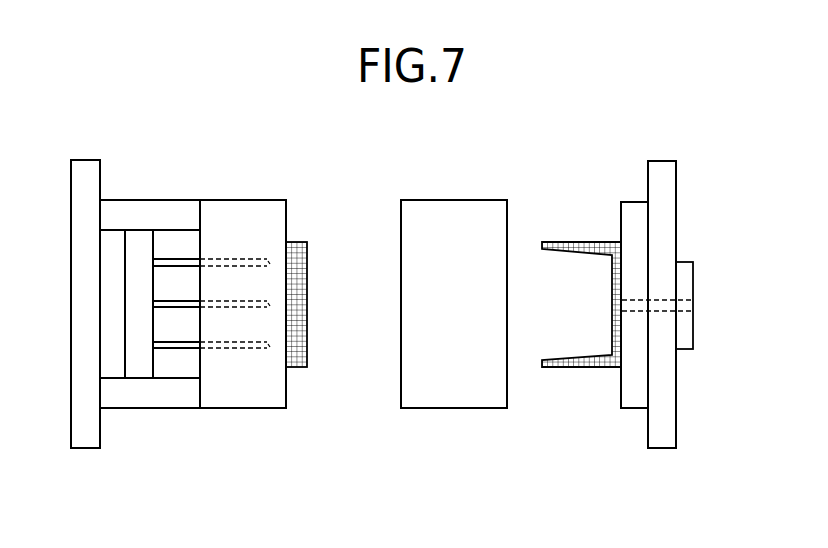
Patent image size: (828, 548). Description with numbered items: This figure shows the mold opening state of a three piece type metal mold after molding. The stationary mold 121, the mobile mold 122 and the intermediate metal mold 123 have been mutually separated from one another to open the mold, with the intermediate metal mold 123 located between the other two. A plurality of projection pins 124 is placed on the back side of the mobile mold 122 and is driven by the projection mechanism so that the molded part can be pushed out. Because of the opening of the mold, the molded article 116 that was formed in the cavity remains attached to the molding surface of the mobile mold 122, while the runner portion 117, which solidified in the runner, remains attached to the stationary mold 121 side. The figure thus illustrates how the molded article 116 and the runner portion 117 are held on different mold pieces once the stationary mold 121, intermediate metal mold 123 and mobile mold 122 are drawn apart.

The molded article 116 is at (307, 325).
The runner portion 117 is at (582, 370).
The stationary mold 121 is at (636, 220).
The mobile mold 122 is at (227, 225).
The intermediate metal mold 123 is at (455, 225).
The projection pins 124 is at (176, 352).